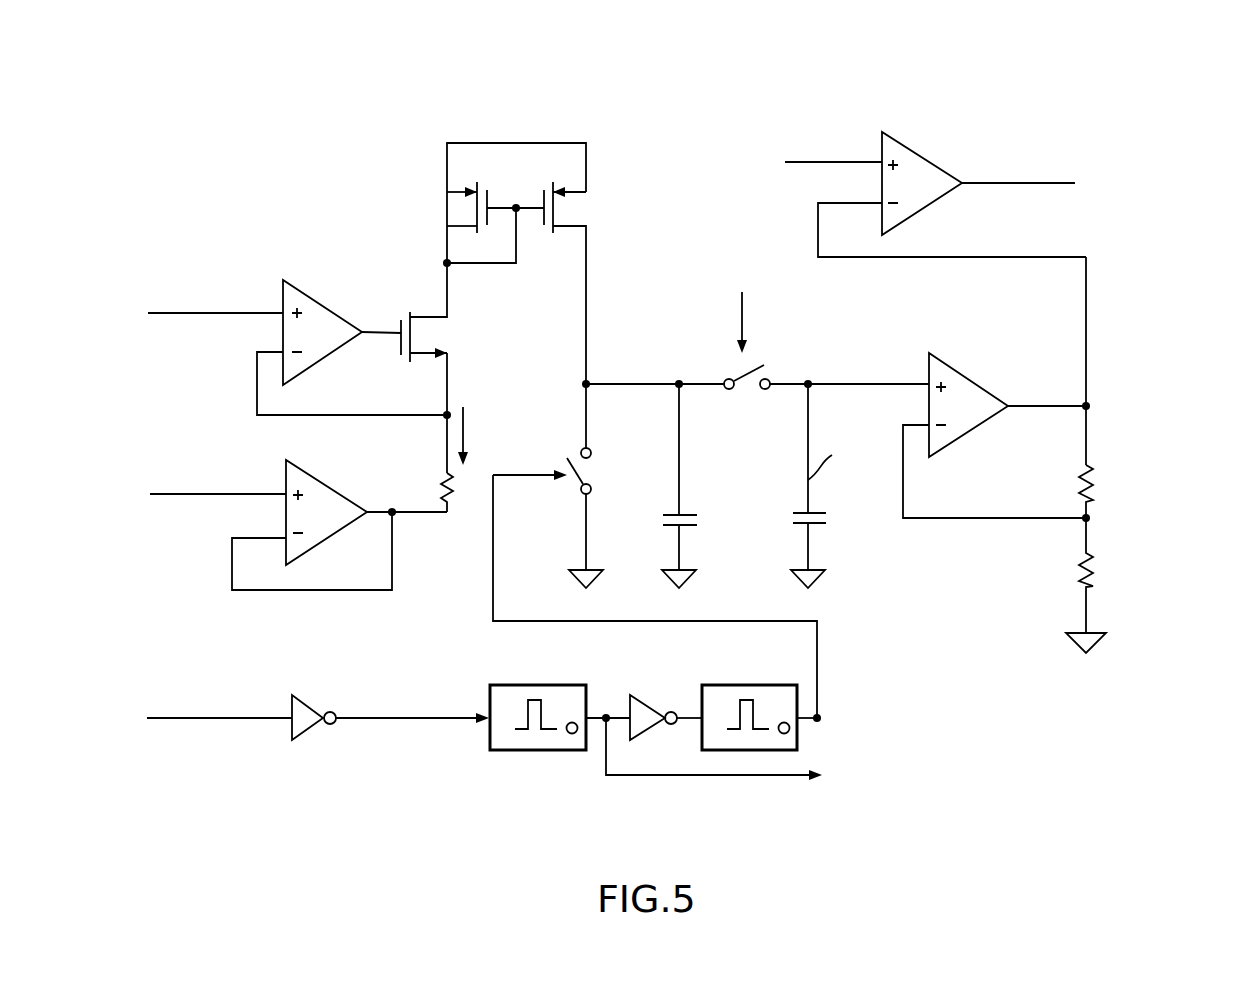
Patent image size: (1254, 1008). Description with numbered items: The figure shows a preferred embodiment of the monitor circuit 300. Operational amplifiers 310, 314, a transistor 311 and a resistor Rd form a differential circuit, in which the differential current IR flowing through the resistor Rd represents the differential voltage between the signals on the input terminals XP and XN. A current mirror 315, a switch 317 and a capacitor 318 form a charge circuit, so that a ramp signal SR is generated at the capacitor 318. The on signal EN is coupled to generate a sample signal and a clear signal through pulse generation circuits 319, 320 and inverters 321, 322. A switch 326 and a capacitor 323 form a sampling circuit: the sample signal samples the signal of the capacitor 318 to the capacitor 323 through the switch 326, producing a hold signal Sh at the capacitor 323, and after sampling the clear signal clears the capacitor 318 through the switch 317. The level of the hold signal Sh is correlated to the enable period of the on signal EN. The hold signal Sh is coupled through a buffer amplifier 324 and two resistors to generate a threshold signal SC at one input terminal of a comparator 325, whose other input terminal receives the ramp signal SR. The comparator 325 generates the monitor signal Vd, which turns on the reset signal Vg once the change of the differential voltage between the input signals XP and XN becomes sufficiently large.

The monitor circuit 300 is at (1252, 62).
The operational amplifier 310 is at (313, 298).
The transistor 311 is at (437, 342).
The operational amplifier 314 is at (317, 478).
The current mirror 315 is at (513, 125).
The switch 317 is at (592, 467).
The capacitor 318 is at (707, 520).
The pulse generation circuit 319 is at (517, 685).
The pulse generation circuit 320 is at (733, 685).
The inverter 321 is at (388, 737).
The inverter 322 is at (666, 701).
The capacitor 323 is at (842, 522).
The buffer amplifier 324 is at (960, 372).
The comparator 325 is at (922, 155).
The switch 326 is at (770, 368).